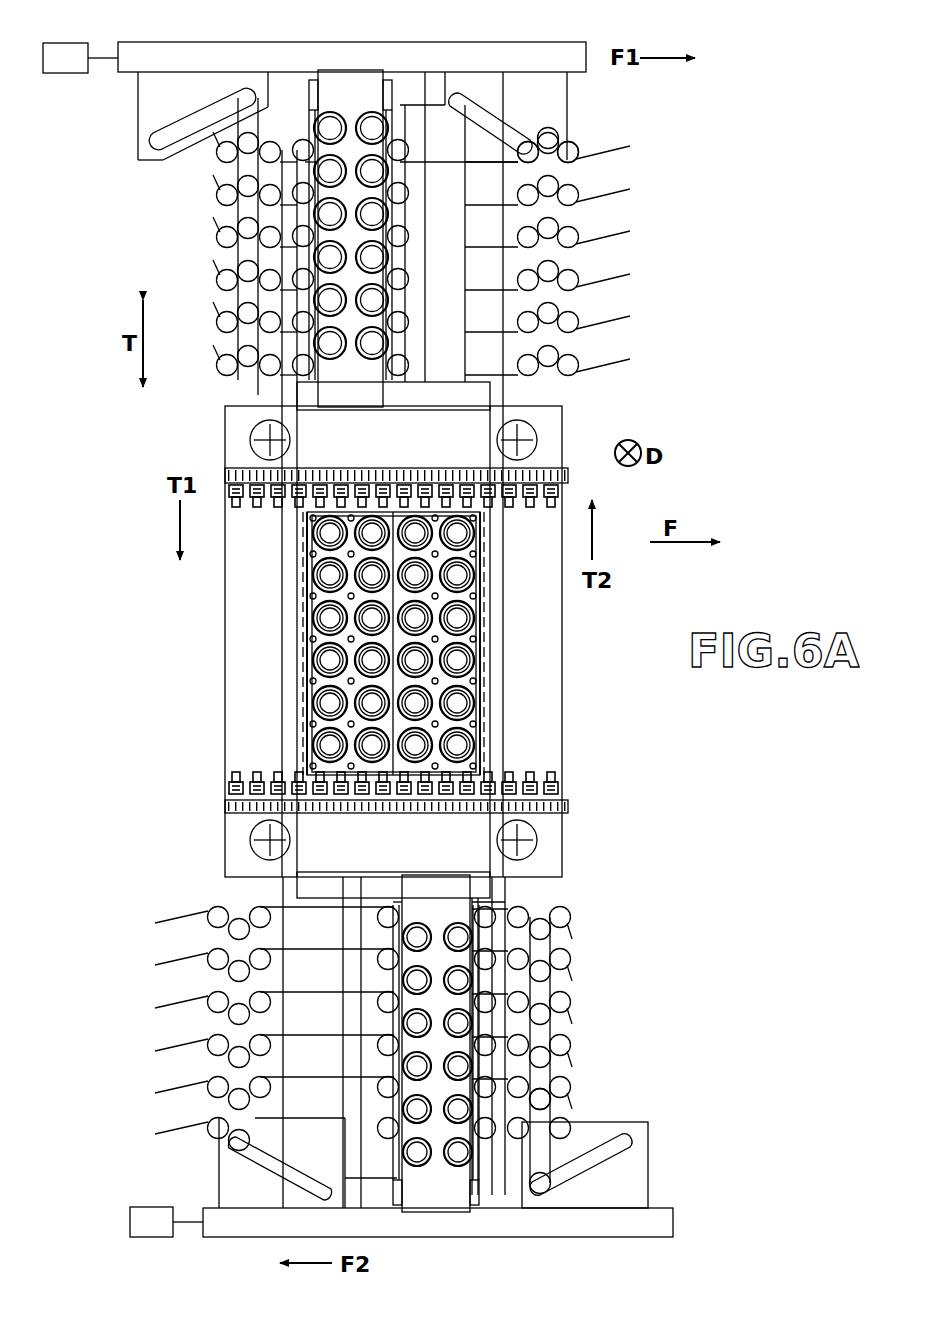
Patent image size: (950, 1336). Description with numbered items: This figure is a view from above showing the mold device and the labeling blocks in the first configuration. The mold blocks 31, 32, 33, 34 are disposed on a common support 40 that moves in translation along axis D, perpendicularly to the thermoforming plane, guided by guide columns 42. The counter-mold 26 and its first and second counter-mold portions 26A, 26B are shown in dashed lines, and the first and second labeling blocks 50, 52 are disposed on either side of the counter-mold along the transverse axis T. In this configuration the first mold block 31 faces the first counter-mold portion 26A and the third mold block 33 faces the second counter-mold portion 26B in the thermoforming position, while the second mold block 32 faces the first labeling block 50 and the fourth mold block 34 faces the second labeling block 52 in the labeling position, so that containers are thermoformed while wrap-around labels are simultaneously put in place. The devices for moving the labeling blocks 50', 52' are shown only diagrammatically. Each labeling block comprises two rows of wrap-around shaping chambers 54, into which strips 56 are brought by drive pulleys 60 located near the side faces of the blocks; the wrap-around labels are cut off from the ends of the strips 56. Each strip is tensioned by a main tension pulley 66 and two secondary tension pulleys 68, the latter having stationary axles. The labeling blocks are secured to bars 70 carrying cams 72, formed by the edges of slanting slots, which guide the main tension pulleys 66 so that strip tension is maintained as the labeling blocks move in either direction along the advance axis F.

The counter-mold 26 is at (298, 605).
The first counter-mold portion 26A is at (302, 663).
The second counter-mold portion 26B is at (485, 663).
The first mold block 31 is at (306, 553).
The third mold block 33 is at (483, 550).
The second mold block 32 is at (190, 252).
The fourth mold block 34 is at (524, 897).
The common support 40 is at (548, 733).
The guide columns 42 is at (252, 440).
The first labeling block 50 is at (350, 205).
The device for moving the labeling block 50' is at (80, 38).
The second labeling block 52 is at (436, 1073).
The device for moving the labeling block 52' is at (166, 1200).
The wrap-around shaping chambers 54 is at (328, 126).
The strips 56 is at (622, 148).
The drive pulleys 60 is at (398, 148).
The main tension pulley 66 is at (549, 136).
The secondary tension pulleys 68 is at (528, 148).
The bars 70 is at (563, 56).
The cams 72 is at (532, 132).